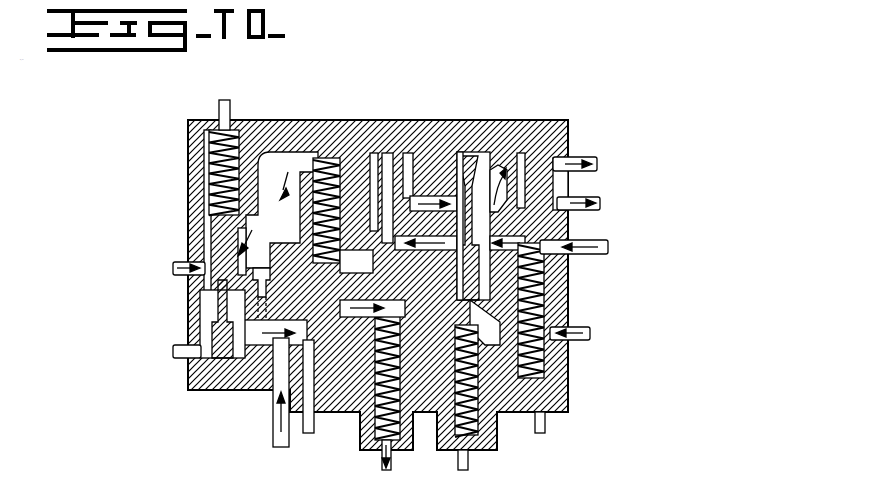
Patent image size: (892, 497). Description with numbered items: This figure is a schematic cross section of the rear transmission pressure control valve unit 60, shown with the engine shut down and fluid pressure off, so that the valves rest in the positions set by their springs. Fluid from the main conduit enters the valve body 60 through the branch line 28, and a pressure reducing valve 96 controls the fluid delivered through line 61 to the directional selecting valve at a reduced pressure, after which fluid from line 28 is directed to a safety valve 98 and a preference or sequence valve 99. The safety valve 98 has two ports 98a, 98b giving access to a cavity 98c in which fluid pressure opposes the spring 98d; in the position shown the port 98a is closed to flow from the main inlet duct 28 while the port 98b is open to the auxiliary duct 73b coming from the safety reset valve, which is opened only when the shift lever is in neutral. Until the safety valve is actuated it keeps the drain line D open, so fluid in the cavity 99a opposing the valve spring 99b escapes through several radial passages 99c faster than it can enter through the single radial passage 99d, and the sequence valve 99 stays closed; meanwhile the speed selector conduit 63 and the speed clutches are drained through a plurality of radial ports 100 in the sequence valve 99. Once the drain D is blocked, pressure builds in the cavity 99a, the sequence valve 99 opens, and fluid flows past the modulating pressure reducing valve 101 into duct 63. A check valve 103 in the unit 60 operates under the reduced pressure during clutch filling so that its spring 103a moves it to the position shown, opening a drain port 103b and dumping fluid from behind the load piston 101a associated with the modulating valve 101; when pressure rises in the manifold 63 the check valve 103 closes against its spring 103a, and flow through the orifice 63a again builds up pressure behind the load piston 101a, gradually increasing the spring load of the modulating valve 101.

The pressure control valve unit 60 is at (565, 118).
The line to speed selection valve 63 is at (272, 430).
The orifice 63a is at (286, 240).
The auxiliary duct 73b is at (572, 330).
The pressure reducing valve 96 is at (572, 186).
The safety valve 98 is at (490, 150).
The port 98a is at (460, 152).
The port 98b is at (497, 290).
The cavity 98c is at (473, 185).
The spring 98d is at (485, 440).
The sequence valve 99 is at (383, 170).
The cavity 99a is at (390, 152).
The valve spring 99b is at (395, 440).
The radial passages 99c is at (430, 152).
The radial passage 99d is at (426, 243).
The radial ports 100 is at (378, 345).
The modulating pressure reducing valve 101 is at (342, 420).
The load piston 101a is at (308, 152).
The check valve 103 is at (205, 332).
The spring 103a is at (206, 170).
The drain port 103b is at (182, 266).
The line 61 is at (592, 204).
The branch line 28 is at (592, 252).
The drain line D is at (588, 160).